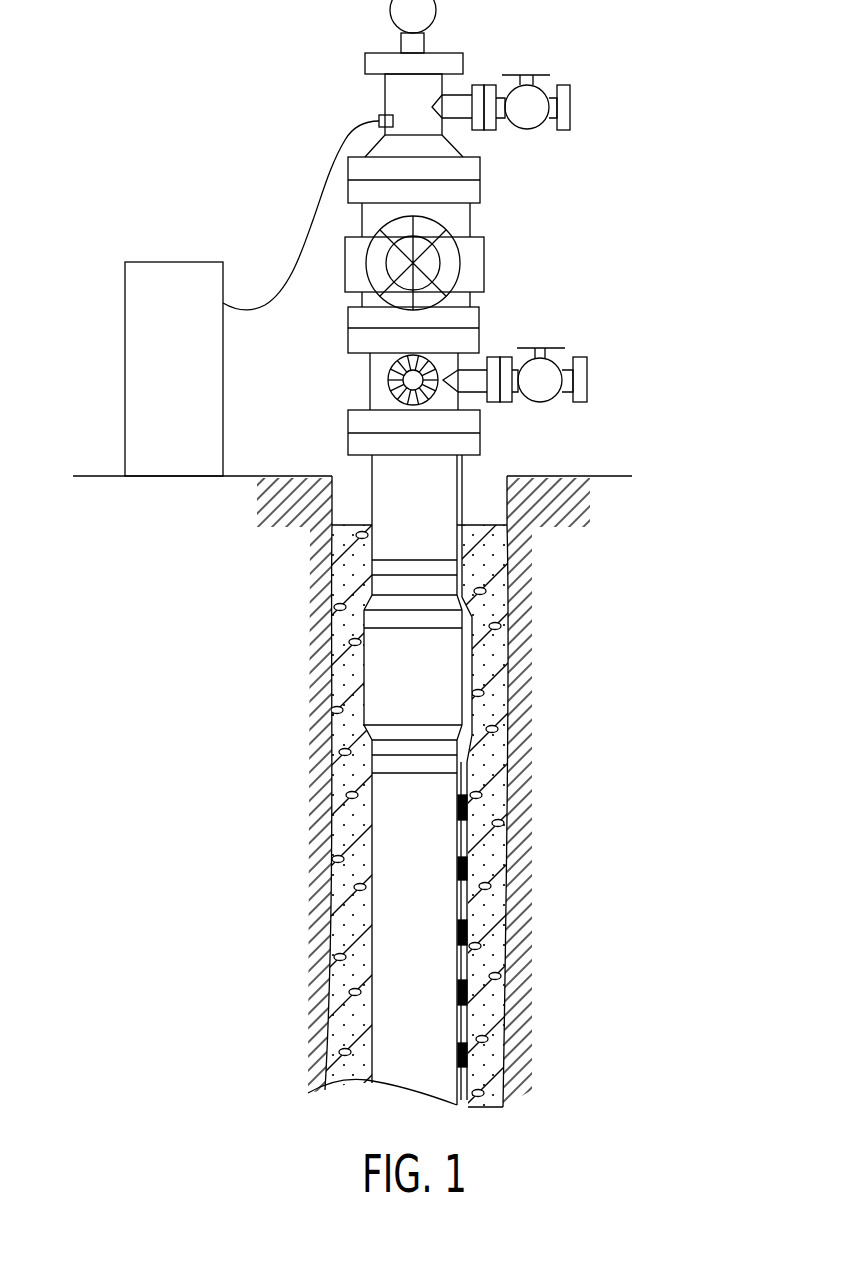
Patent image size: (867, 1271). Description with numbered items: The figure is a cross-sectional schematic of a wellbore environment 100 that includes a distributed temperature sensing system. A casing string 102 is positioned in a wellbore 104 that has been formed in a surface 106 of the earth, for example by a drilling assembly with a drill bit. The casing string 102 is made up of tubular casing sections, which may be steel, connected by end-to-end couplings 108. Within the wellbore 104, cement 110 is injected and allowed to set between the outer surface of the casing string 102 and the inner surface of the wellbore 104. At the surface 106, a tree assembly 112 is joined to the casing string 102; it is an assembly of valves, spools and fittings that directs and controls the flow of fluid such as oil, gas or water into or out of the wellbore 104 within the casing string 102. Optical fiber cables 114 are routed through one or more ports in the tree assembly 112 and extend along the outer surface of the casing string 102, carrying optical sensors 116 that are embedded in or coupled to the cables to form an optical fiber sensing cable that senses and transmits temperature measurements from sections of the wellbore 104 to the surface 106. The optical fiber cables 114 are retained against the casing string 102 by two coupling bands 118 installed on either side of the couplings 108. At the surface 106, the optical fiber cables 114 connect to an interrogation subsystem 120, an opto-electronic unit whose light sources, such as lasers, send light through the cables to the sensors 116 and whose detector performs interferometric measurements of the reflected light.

The wellbore environment 100 is at (180, 99).
The casing string 102 is at (444, 473).
The wellbore 104 is at (347, 492).
The surface 106 is at (92, 476).
The couplings 108 is at (447, 695).
The cement 110 is at (498, 920).
The tree assembly 112 is at (608, 446).
The optical fiber cables 114 is at (317, 220).
The optical sensors 116 is at (457, 932).
The coupling bands 118 is at (393, 560).
The interrogation subsystem 120 is at (125, 398).